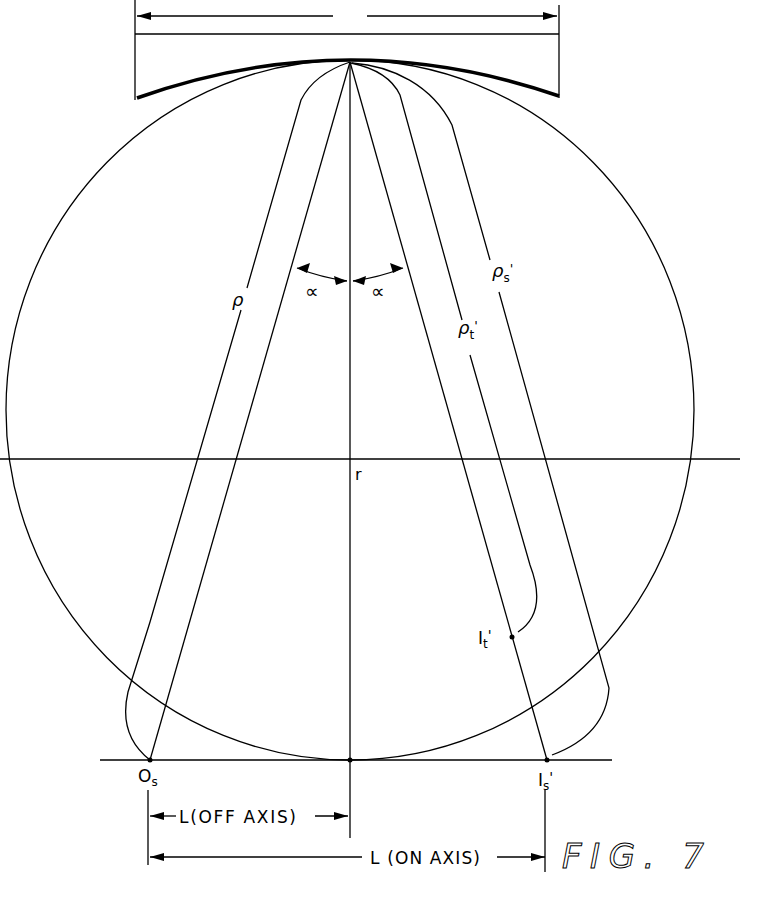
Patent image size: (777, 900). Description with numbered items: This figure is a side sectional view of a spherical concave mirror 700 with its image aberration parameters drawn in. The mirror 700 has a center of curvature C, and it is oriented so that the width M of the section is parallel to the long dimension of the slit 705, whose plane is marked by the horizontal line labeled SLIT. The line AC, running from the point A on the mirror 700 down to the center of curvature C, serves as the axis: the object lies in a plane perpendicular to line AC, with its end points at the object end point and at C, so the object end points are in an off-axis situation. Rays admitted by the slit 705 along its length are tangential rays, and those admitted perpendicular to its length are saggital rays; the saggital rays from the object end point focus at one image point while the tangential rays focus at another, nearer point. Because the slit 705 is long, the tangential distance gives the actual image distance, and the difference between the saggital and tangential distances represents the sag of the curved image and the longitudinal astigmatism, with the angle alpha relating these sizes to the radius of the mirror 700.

The spherical concave mirror 700 is at (550, 56).
The slit 705 is at (128, 433).
The point A is at (348, 440).
The center of curvature C is at (356, 750).
The width M is at (347, 16).
The slit plane line SLIT is at (370, 449).